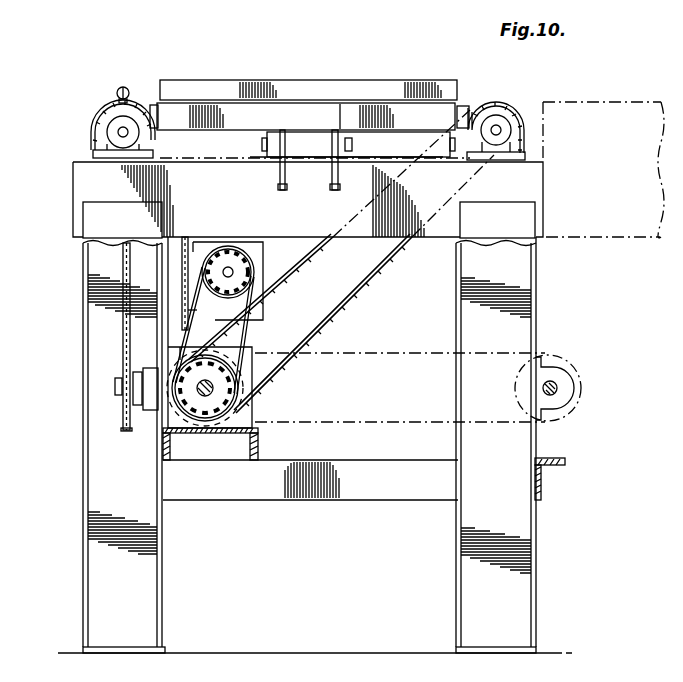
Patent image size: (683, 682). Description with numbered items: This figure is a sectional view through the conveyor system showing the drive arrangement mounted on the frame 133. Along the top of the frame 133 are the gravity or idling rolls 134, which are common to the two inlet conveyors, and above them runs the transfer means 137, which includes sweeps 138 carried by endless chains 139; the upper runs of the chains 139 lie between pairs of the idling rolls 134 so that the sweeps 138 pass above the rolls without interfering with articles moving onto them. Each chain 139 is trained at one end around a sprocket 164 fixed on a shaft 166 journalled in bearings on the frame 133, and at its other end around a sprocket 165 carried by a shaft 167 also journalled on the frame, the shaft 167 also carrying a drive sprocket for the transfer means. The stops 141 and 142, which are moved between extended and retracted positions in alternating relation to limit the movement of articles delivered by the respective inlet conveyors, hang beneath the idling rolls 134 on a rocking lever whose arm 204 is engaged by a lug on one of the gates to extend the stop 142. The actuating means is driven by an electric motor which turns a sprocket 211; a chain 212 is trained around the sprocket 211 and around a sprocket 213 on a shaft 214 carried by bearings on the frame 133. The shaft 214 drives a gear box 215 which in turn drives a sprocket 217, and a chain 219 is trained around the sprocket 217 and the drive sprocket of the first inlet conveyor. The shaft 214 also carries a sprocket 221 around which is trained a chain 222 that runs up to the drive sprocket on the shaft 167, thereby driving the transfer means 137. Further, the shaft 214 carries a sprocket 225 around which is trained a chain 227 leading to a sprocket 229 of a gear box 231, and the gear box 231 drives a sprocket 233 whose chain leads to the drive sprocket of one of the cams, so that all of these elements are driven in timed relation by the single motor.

The frame 133 is at (84, 521).
The idling rolls 134 is at (288, 102).
The transfer means 137 is at (136, 82).
The sweeps 138 is at (118, 87).
The endless chains 139 is at (104, 107).
The stop 141 is at (358, 110).
The stop 142 is at (210, 80).
The sprocket 164 is at (104, 120).
The sprocket 165 is at (492, 105).
The shaft 166 is at (118, 132).
The shaft 167 is at (500, 128).
The arm 204 is at (336, 190).
The sprocket 211 is at (530, 388).
The chain 212 is at (373, 352).
The sprocket 213 is at (180, 405).
The shaft 214 is at (206, 398).
The gear box 215 is at (258, 430).
The sprocket 217 is at (115, 388).
The chain 219 is at (121, 313).
The sprocket 221 is at (242, 386).
The chain 222 is at (372, 275).
The sprocket 225 is at (246, 403).
The chain 227 is at (259, 313).
The sprocket 229 is at (248, 268).
The gear box 231 is at (212, 244).
The sprocket 233 is at (192, 305).